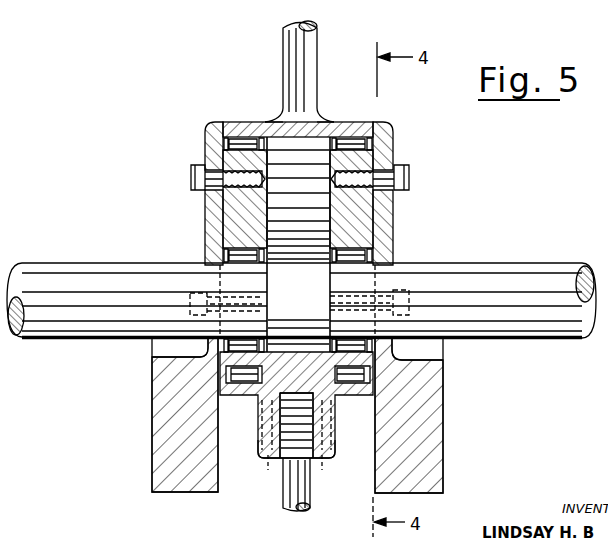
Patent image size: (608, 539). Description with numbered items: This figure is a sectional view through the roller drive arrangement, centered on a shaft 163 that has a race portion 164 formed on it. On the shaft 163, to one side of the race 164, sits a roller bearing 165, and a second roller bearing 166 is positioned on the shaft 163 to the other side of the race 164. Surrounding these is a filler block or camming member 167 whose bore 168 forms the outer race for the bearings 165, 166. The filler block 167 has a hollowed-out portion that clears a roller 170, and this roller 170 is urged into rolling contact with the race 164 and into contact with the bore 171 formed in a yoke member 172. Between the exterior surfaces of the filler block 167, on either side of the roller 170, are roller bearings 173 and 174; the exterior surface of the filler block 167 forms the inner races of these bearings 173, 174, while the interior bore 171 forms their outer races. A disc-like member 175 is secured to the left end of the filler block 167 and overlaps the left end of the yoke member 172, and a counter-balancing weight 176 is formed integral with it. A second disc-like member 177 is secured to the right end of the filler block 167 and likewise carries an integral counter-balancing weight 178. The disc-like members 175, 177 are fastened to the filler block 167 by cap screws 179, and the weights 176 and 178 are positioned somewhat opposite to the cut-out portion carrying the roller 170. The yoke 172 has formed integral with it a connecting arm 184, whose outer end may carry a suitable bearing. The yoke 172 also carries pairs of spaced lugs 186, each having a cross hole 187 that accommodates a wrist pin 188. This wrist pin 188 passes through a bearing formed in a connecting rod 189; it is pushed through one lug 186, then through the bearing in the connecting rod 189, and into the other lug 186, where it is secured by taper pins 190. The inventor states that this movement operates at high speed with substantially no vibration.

The shaft 163 is at (493, 278).
The race portion 164 is at (314, 291).
The roller bearing 165 is at (384, 248).
The second roller bearing 166 is at (222, 235).
The filler block or camming member 167 is at (382, 211).
The bore 168 is at (334, 397).
The roller 170 is at (310, 160).
The bore 171 is at (313, 128).
The yoke member 172 is at (268, 123).
The roller bearing 173 is at (374, 124).
The roller bearing 174 is at (262, 130).
The disc-like member 175 is at (214, 143).
The counter-balancing weight 176 is at (164, 403).
The second disc-like member 177 is at (391, 143).
The counter-balancing weight 178 is at (444, 407).
The cap screws 179 is at (193, 180).
The connecting arm 184 is at (312, 47).
The spaced lugs 186 is at (336, 448).
The cross hole 187 is at (263, 422).
The wrist pin 188 is at (332, 424).
The connecting rod 189 is at (291, 482).
The taper pins 190 is at (268, 455).